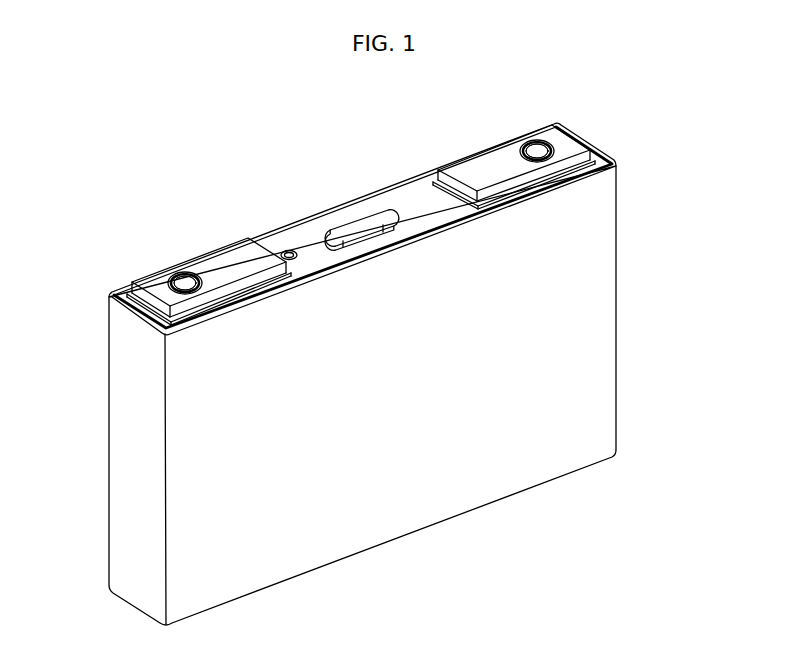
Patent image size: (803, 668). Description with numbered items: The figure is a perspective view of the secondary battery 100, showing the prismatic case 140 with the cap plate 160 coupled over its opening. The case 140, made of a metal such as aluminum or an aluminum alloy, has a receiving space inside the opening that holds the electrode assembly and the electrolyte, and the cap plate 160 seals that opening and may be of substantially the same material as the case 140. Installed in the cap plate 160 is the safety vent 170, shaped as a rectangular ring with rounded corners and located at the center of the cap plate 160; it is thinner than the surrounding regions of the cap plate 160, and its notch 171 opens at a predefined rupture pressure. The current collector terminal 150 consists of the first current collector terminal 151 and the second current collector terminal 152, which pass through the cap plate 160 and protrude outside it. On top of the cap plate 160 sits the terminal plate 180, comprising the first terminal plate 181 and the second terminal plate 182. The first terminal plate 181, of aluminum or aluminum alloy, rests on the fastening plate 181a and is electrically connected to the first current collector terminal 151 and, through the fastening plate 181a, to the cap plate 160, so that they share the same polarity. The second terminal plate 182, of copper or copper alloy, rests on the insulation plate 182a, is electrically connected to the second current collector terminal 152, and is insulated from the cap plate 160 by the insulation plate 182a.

The secondary battery 100 is at (26, 129).
The case 140 is at (120, 422).
The current collector terminal 150 is at (693, 196).
The first current collector terminal 151 is at (195, 297).
The second current collector terminal 152 is at (547, 145).
The cap plate 160 is at (406, 190).
The safety vent 170 is at (322, 222).
The notch 171 is at (360, 217).
The terminal plate 180 is at (491, 269).
The first terminal plate 181 is at (242, 268).
The fastening plate 181a is at (134, 286).
The second terminal plate 182 is at (485, 178).
The insulation plate 182a is at (437, 167).